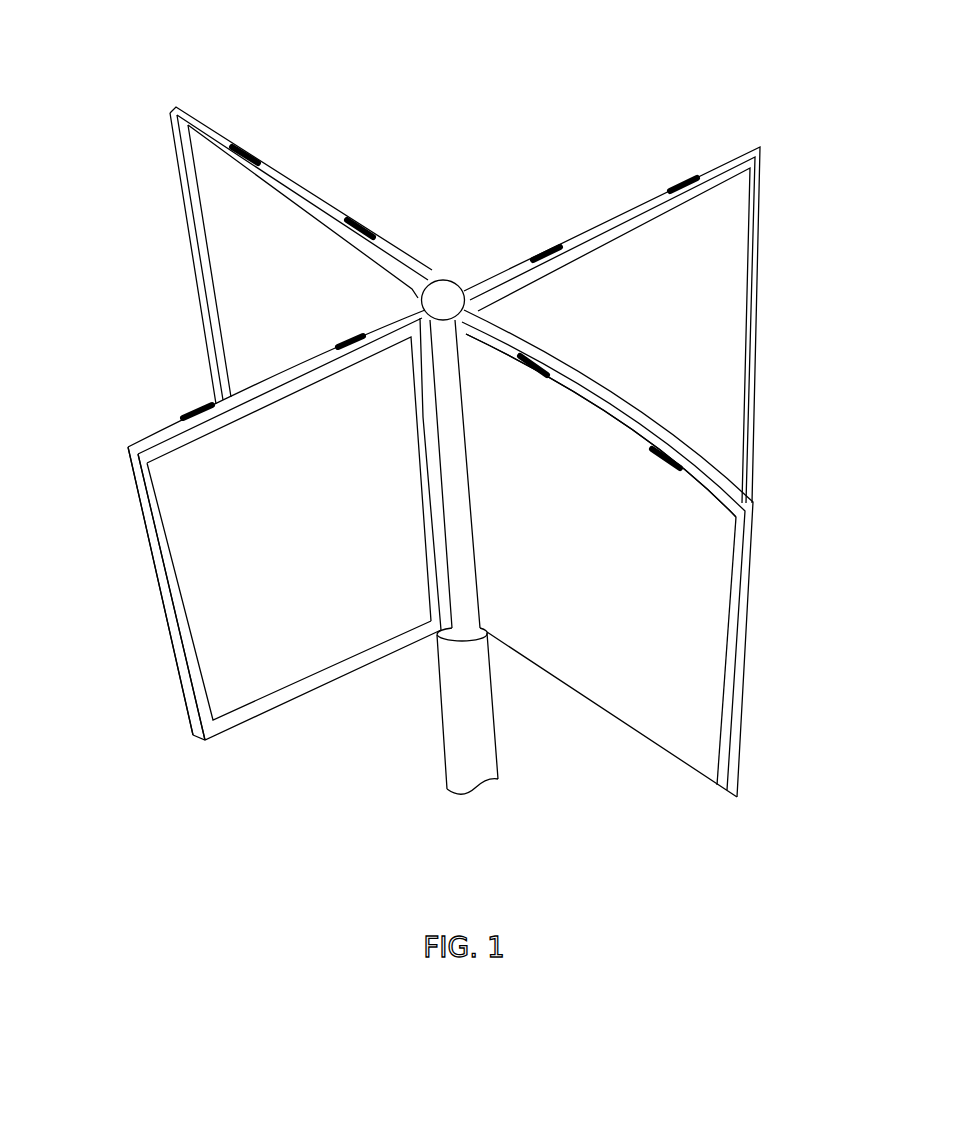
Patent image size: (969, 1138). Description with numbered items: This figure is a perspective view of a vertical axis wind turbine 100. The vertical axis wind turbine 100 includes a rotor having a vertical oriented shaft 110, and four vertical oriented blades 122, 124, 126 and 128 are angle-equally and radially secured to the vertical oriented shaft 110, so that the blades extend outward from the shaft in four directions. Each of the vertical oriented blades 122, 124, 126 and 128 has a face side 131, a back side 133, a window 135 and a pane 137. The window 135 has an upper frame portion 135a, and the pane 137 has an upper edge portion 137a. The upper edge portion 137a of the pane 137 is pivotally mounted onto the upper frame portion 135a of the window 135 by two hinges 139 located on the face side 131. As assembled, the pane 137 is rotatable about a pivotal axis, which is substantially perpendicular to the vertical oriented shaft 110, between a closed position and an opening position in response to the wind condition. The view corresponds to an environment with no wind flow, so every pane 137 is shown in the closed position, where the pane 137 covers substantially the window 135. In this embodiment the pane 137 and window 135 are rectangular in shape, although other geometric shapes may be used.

The vertical axis wind turbine 100 is at (469, 31).
The vertical oriented shaft 110 is at (455, 720).
The vertical oriented blade 122 is at (735, 787).
The vertical oriented blade 124 is at (736, 162).
The vertical oriented blade 126 is at (180, 112).
The vertical oriented blade 128 is at (160, 438).
The face side 131 is at (740, 523).
The back side 133 is at (697, 460).
The window 135 is at (290, 597).
The upper frame portion 135a is at (267, 398).
The pane 137 is at (618, 658).
The upper edge portion 137a is at (593, 440).
The hinge 139 is at (537, 370).